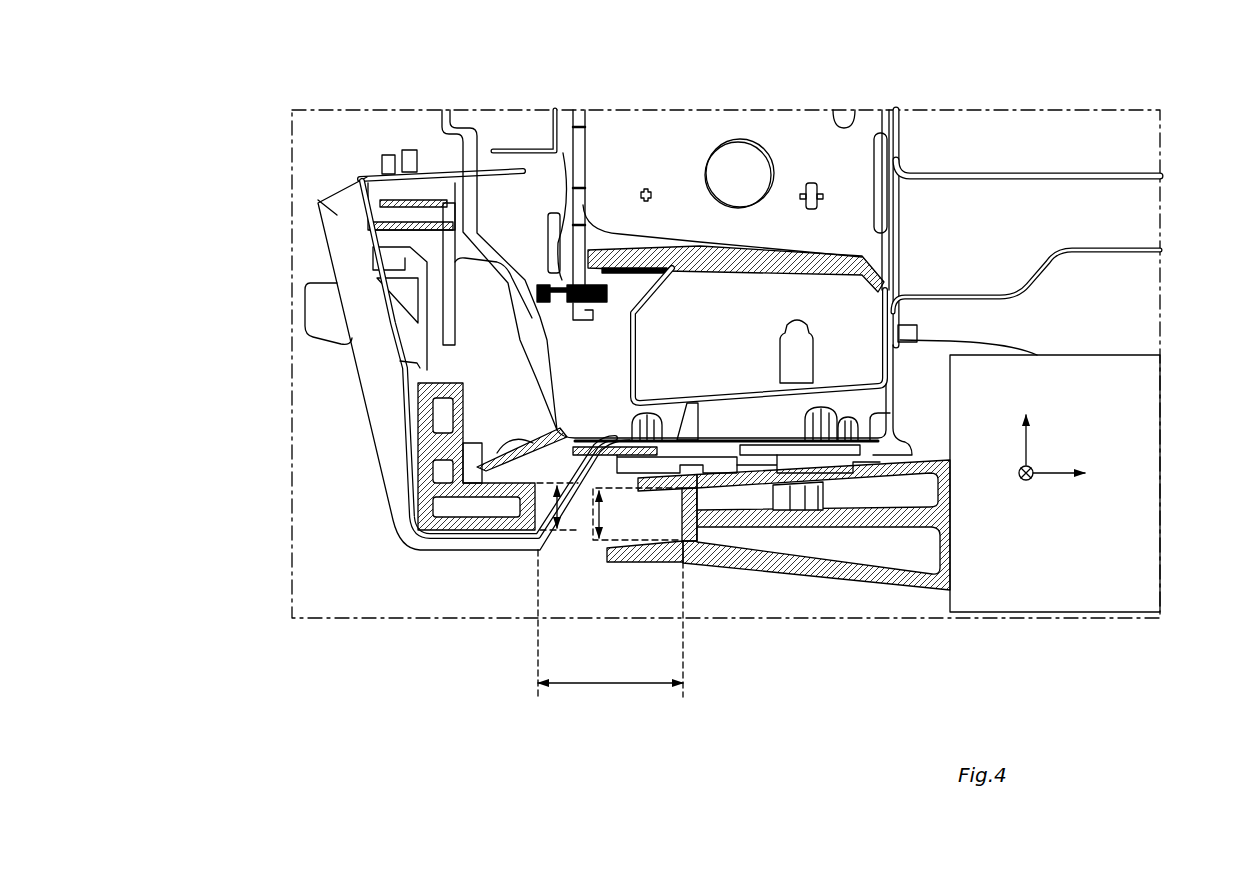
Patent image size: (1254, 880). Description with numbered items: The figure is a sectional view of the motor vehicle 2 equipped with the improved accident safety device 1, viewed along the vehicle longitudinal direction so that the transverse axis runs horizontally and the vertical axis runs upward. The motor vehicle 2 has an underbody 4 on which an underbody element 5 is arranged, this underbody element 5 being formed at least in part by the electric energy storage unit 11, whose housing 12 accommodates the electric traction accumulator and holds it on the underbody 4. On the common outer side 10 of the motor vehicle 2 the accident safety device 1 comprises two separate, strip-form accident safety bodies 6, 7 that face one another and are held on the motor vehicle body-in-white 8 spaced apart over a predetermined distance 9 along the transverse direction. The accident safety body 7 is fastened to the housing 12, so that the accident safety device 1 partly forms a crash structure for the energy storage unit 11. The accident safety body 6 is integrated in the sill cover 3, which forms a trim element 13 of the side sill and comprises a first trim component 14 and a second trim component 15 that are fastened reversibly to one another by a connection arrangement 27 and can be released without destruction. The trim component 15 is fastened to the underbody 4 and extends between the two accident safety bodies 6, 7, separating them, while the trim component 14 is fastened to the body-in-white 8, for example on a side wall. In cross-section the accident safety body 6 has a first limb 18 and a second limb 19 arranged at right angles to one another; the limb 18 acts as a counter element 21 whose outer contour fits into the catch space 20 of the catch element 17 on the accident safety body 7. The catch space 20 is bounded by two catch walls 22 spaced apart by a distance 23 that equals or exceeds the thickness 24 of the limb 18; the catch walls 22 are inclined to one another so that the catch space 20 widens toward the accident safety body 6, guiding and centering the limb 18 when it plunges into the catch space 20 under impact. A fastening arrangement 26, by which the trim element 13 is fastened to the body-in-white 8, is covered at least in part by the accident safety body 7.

The accident safety device 1 is at (375, 590).
The motor vehicle 2 is at (786, 107).
The sill cover 3 is at (413, 363).
The trim element 13 is at (413, 363).
The underbody 4 is at (710, 443).
The underbody element 5 is at (1070, 476).
The electric energy storage unit 11 is at (1070, 476).
The accident safety body 6 is at (417, 468).
The accident safety body 7 is at (891, 590).
The motor vehicle body-in-white 8 is at (980, 224).
The distance 9 is at (608, 690).
The outer side 10 is at (327, 402).
The housing 12 is at (1128, 533).
The first trim component 14 is at (318, 200).
The second trim component 15 is at (664, 275).
The catch element 17 is at (657, 564).
The first limb 18 is at (488, 420).
The counter element 21 is at (503, 521).
The second limb 19 is at (462, 380).
The catch space 20 is at (670, 527).
The catch walls 22 is at (663, 487).
The distance 23 is at (601, 513).
The thickness 24 is at (557, 487).
The fastening arrangement 26 is at (632, 413).
The connection arrangement 27 is at (557, 437).